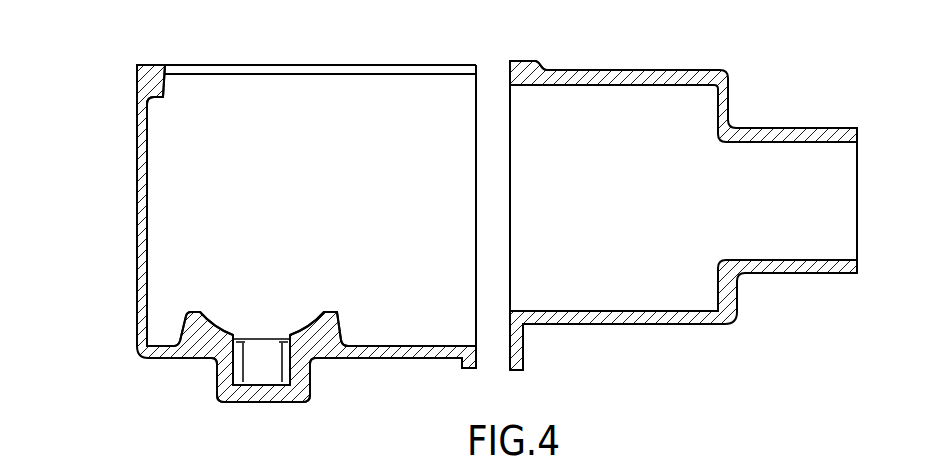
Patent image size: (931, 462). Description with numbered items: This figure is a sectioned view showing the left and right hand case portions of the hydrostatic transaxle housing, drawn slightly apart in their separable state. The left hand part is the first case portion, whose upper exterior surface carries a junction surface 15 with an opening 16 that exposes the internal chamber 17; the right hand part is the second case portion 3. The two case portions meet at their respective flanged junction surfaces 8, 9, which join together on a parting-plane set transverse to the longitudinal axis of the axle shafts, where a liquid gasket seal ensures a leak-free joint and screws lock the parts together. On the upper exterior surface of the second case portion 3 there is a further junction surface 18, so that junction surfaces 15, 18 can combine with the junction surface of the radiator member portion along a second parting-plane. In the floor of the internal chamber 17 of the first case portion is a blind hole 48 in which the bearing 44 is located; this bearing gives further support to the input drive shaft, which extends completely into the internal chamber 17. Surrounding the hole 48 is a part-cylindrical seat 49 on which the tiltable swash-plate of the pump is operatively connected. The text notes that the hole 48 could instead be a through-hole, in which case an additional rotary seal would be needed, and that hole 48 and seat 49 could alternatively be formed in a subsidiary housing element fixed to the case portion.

The second case portion 3 is at (677, 74).
The flanged junction surface 8 is at (482, 62).
The flanged junction surface 9 is at (505, 64).
The junction surface 15 is at (152, 66).
The opening 16 is at (172, 70).
The internal chamber 17 is at (309, 195).
The junction surface 18 is at (548, 70).
The bearing 44 is at (298, 402).
The blind hole 48 is at (248, 364).
The part-cylindrical seat 49 is at (303, 320).